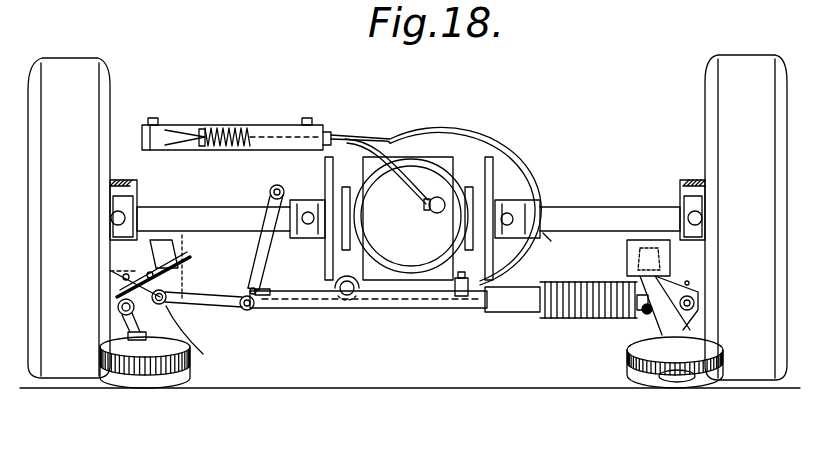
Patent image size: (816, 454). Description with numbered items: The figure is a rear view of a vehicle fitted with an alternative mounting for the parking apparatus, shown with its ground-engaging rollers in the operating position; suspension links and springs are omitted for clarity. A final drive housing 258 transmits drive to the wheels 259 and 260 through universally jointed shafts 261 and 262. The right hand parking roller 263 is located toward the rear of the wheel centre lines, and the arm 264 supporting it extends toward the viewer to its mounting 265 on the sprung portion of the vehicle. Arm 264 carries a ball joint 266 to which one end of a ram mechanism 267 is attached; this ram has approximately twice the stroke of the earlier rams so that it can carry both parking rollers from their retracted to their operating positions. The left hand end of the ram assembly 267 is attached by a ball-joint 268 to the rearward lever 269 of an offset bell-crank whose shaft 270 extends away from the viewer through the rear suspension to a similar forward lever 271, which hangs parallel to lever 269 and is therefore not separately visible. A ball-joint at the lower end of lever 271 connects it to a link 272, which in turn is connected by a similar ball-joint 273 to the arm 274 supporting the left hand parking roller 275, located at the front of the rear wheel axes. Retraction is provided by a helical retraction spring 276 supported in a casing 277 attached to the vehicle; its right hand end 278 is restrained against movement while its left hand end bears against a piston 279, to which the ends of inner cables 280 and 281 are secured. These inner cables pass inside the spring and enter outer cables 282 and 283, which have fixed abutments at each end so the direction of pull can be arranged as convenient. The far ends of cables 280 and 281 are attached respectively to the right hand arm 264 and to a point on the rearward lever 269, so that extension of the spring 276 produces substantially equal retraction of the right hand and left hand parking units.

The final drive housing 258 is at (393, 262).
The wheel 259 is at (102, 80).
The wheel 260 is at (718, 153).
The universally jointed shaft 261 is at (237, 212).
The universally jointed shaft 262 is at (656, 210).
The right hand parking roller 263 is at (640, 379).
The arm 264 is at (667, 320).
The mounting 265 is at (622, 272).
The ball joint 266 is at (643, 313).
The ram mechanism 267 is at (483, 312).
The ball-joint 268 is at (300, 296).
The rearward lever 269 is at (262, 254).
The shaft 270 is at (265, 189).
The forward lever 271 is at (257, 288).
The link 272 is at (252, 311).
The ball-joint 273 is at (203, 354).
The arm 274 is at (142, 330).
The left hand parking roller 275 is at (108, 387).
The helical retraction spring 276 is at (240, 127).
The casing 277 is at (191, 124).
The right hand end 278 is at (313, 125).
The piston 279 is at (220, 148).
The inner cable 280 is at (547, 237).
The inner cable 281 is at (311, 294).
The outer cable 282 is at (503, 144).
The outer cable 283 is at (402, 189).